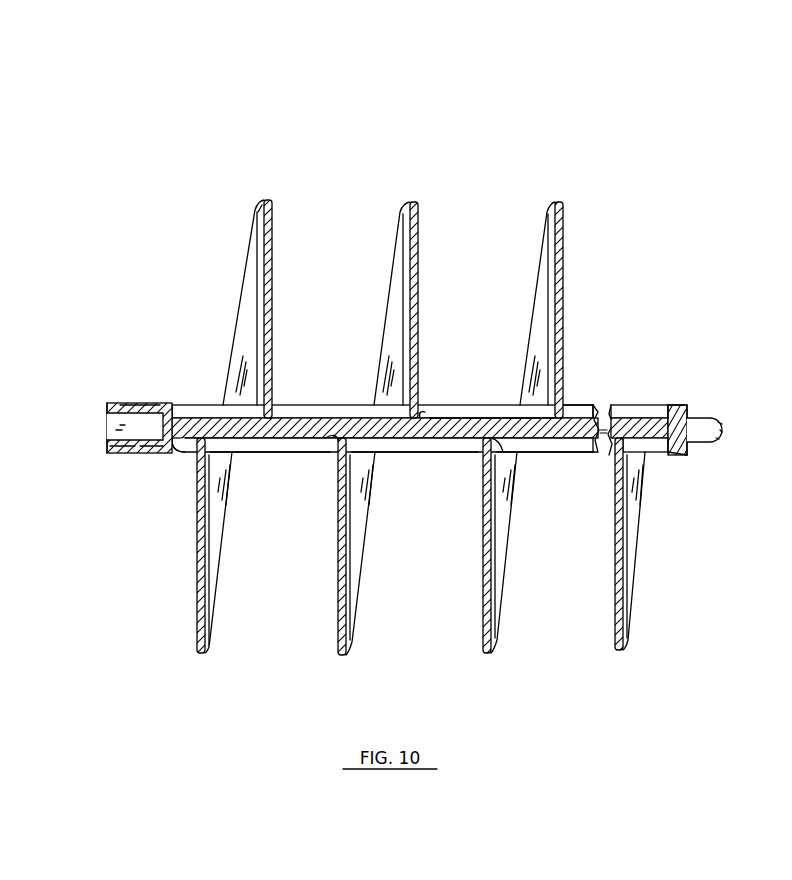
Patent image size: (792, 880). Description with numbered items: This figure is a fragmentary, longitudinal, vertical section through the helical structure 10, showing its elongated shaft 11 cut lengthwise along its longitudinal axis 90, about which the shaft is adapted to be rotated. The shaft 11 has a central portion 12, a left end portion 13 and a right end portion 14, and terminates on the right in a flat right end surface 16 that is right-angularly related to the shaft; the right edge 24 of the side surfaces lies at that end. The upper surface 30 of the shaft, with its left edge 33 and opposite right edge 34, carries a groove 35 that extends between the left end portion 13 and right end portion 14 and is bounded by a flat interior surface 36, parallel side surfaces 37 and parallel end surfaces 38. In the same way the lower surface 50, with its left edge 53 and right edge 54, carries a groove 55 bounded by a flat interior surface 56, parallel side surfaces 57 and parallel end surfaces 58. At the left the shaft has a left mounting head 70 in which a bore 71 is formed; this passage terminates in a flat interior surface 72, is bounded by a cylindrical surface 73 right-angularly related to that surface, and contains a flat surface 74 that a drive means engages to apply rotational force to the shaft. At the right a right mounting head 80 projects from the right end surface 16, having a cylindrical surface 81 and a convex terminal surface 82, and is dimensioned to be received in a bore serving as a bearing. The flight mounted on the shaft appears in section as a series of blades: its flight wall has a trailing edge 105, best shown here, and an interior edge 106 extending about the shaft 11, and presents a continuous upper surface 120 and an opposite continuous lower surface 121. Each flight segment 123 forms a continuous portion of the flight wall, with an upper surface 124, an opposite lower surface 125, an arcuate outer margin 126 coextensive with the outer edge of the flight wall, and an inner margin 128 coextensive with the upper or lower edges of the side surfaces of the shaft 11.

The helical structure 10 is at (358, 146).
The elongated shaft 11 is at (305, 392).
The central portion 12 is at (487, 408).
The left end portion 13 is at (148, 405).
The right end portion 14 is at (687, 408).
The right end surface 16 is at (697, 421).
The right edge 24 is at (690, 447).
The upper surface 30 is at (196, 416).
The left edge 33 is at (108, 405).
The right edge 34 is at (689, 414).
The groove 35 is at (578, 406).
The flat interior surface 36 is at (594, 412).
The side surfaces 37 is at (491, 412).
The end surfaces 38 is at (170, 410).
The lower surface 50 is at (290, 453).
The left edge 53 is at (112, 452).
The right edge 54 is at (688, 456).
The groove 55 is at (422, 453).
The flat interior surface 56 is at (460, 452).
The side surfaces 57 is at (256, 453).
The end surfaces 58 is at (180, 445).
The left mounting head 70 is at (122, 446).
The bore 71 is at (125, 422).
The flat interior surface 72 is at (120, 433).
The cylindrical surface 73 is at (145, 446).
The flat surface 74 is at (135, 421).
The right mounting head 80 is at (713, 442).
The cylindrical surface 81 is at (718, 434).
The convex terminal surface 82 is at (720, 426).
The longitudinal axis 90 is at (95, 431).
The trailing edge 105 is at (636, 573).
The interior edge 106 is at (330, 438).
The upper surface 120 is at (250, 270).
The lower surface 121 is at (362, 525).
The flight segment 123 is at (565, 250).
The upper surface 124 is at (262, 222).
The lower surface 125 is at (418, 262).
The arcuate outer margin 126 is at (414, 202).
The inner margin 128 is at (421, 412).